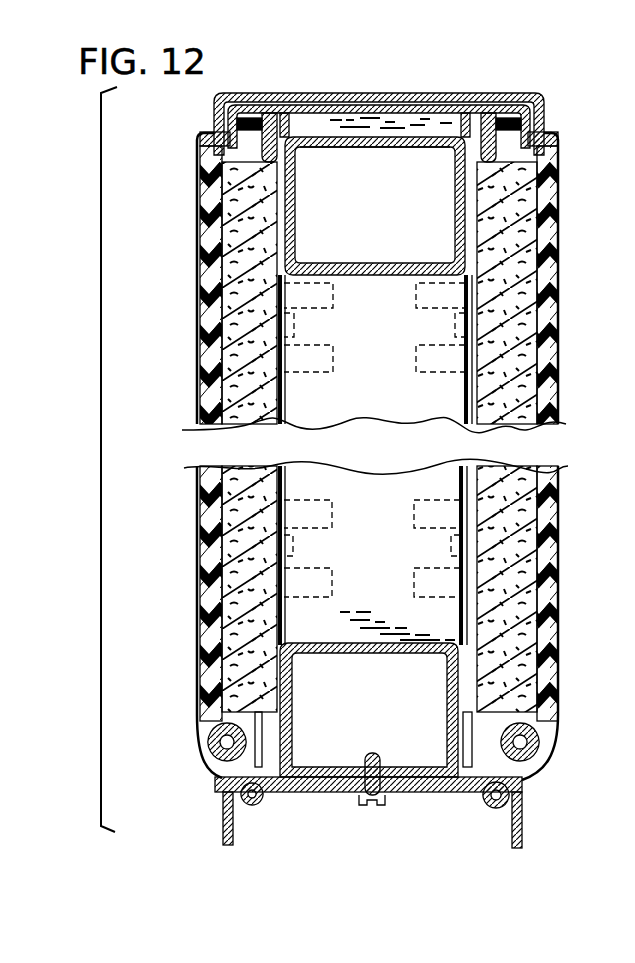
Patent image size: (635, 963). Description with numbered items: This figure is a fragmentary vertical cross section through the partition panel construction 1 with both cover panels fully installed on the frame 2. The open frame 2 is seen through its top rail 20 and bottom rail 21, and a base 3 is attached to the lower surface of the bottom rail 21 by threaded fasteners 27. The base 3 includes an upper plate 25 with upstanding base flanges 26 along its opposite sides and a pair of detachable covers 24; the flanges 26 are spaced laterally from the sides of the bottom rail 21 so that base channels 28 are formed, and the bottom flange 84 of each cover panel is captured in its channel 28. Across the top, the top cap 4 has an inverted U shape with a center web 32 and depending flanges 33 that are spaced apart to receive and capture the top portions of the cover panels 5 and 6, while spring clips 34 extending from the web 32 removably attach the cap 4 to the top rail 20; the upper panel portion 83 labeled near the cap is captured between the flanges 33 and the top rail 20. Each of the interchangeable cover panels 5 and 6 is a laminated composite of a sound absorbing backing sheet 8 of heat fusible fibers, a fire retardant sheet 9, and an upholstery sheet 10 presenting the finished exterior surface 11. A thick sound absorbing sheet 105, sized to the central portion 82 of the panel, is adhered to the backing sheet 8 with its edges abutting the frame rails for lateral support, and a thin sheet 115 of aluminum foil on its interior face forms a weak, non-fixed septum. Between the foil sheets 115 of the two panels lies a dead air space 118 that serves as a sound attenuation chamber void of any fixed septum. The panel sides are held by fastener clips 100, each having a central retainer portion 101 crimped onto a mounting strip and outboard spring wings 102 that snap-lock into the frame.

The partition panel construction 1 is at (566, 254).
The frame 2 is at (392, 152).
The base 3 is at (240, 826).
The top cap 4 is at (526, 93).
The cover panel 5 is at (195, 628).
The cover panel 6 is at (562, 674).
The sound absorbing backing sheet 8 is at (220, 428).
The fire retardant sheet 9 is at (205, 426).
The upholstery sheet 10 is at (197, 428).
The finished exterior surface 11 is at (197, 549).
The top rail 20 is at (298, 200).
The bottom rail 21 is at (324, 642).
The detachable covers 24 is at (222, 828).
The upper plate 25 is at (240, 796).
The base flanges 26 is at (210, 772).
The threaded fasteners 27 is at (386, 798).
The base channels 28 is at (294, 748).
The center web 32 is at (310, 118).
The depending flanges 33 is at (214, 106).
The spring clips 34 is at (340, 104).
The central portion 82 is at (197, 290).
The inner lip 83 is at (222, 135).
The bottom flange 84 is at (208, 745).
The fastener clips 100 is at (340, 307).
The central retainer portion 101 is at (296, 327).
The spring wings 102 is at (336, 297).
The sound absorbing sheet 105 is at (558, 596).
The thin sheet 115 is at (278, 428).
The dead air space 118 is at (407, 491).